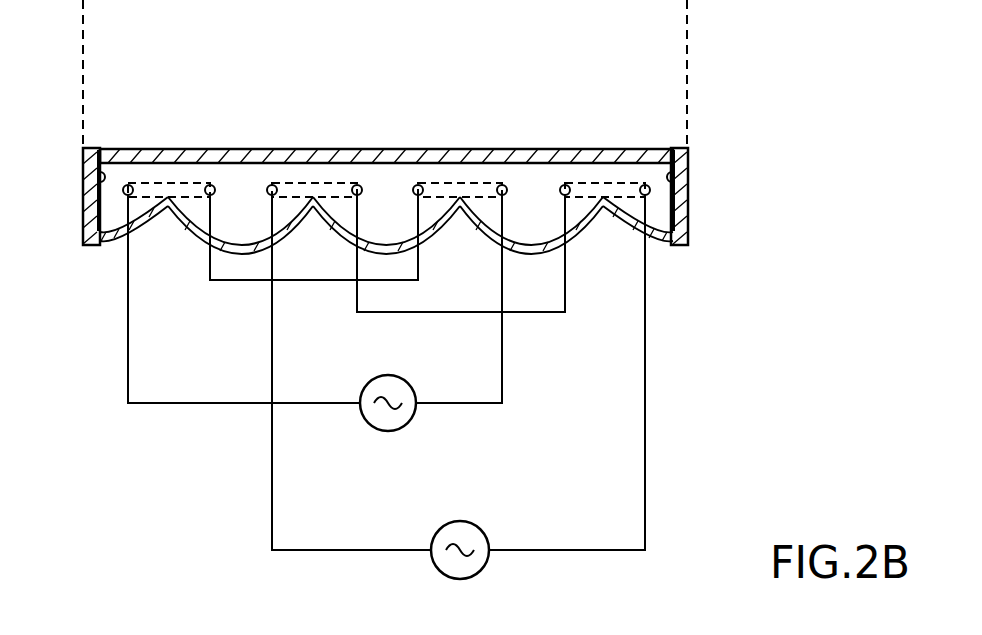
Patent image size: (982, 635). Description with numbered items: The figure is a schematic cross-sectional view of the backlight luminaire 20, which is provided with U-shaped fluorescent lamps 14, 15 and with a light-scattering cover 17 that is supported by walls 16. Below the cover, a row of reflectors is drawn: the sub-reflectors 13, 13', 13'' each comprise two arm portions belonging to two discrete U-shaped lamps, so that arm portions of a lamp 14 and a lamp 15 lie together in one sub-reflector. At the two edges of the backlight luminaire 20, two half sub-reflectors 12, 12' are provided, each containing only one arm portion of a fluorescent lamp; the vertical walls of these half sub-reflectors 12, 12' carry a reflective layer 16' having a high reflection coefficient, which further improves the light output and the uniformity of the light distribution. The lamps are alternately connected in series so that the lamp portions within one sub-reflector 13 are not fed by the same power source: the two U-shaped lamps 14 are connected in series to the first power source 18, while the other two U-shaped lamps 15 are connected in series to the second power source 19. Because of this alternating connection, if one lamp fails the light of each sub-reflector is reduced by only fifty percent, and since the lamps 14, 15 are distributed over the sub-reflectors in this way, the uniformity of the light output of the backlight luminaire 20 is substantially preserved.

The half sub-reflector 12 is at (134, 239).
The half sub-reflector 12' is at (635, 248).
The sub-reflector 13 is at (240, 259).
The sub-reflector 13' is at (389, 248).
The sub-reflector 13'' is at (531, 248).
The U-shaped fluorescent lamp 14 is at (180, 183).
The U-shaped fluorescent lamp 15 is at (322, 183).
The wall 16 is at (385, 196).
The reflective layer 16' is at (390, 161).
The light-scattering cover 17 is at (545, 149).
The first power source 18 is at (363, 383).
The second power source 19 is at (436, 528).
The backlight luminaire 20 is at (670, 118).